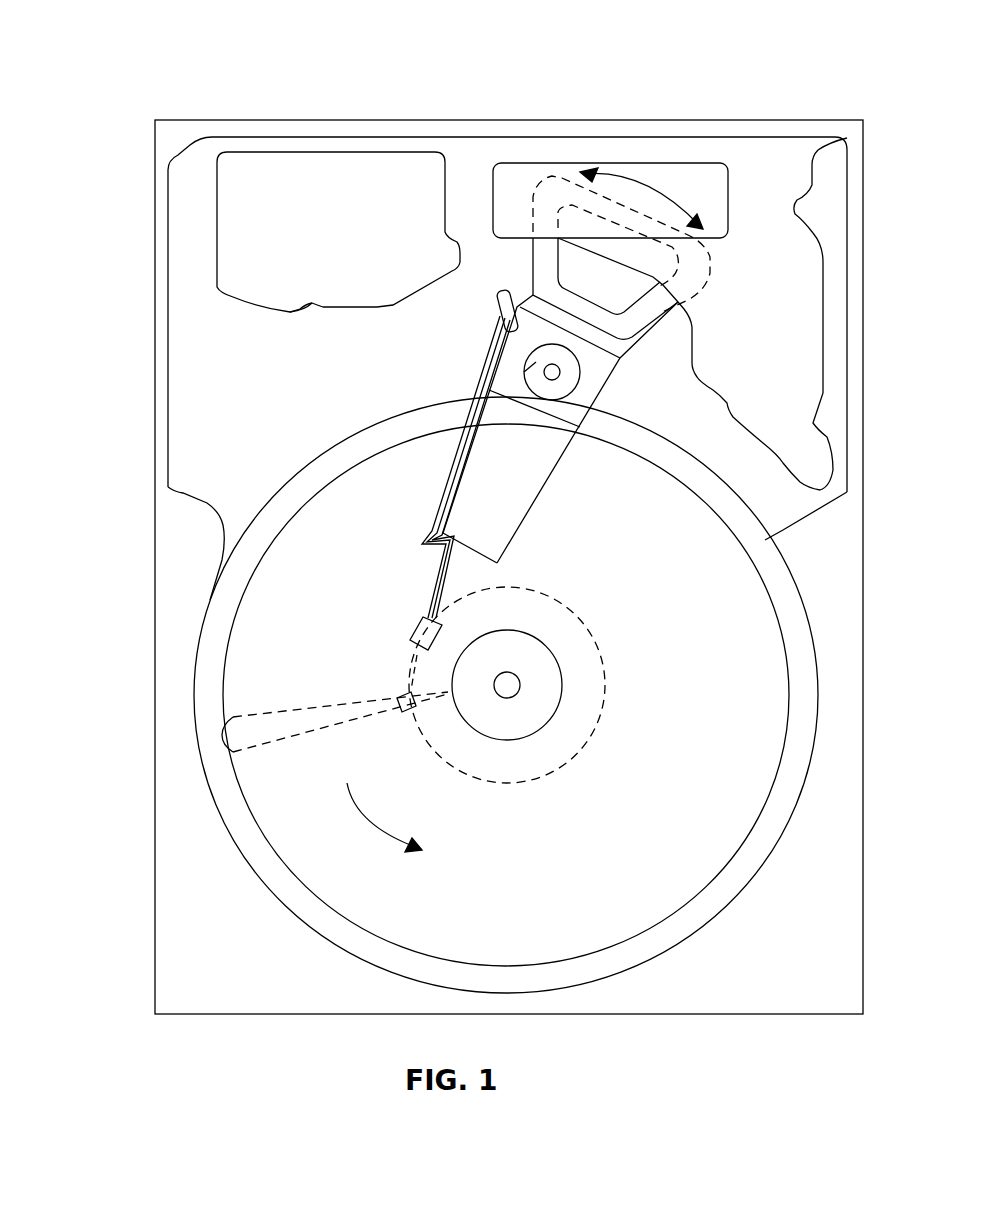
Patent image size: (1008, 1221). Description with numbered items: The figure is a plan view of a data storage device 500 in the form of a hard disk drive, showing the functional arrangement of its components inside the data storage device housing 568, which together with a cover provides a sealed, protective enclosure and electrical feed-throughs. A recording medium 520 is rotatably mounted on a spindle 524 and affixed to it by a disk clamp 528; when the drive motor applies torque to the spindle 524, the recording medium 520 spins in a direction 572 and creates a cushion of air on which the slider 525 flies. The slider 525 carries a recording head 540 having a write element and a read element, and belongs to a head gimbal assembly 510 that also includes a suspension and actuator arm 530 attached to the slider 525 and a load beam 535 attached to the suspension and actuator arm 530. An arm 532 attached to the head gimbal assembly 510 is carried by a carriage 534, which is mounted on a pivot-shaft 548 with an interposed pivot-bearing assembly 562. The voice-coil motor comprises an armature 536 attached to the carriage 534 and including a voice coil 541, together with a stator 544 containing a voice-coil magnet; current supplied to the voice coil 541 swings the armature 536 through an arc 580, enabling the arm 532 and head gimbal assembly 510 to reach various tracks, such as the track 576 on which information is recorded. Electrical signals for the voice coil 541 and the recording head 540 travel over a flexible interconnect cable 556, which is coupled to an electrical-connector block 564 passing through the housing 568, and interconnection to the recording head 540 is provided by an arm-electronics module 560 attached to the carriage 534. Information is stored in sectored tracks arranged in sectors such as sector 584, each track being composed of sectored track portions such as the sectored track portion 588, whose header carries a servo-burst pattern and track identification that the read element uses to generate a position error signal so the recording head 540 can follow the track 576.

The data storage device 500 is at (148, 40).
The head gimbal assembly 510 is at (80, 440).
The recording medium 520 is at (752, 670).
The spindle 524 is at (512, 690).
The slider 525 is at (427, 625).
The disk clamp 528 is at (515, 722).
The suspension and actuator arm 530 is at (430, 588).
The arm 532 is at (500, 505).
The carriage 534 is at (580, 416).
The load beam 535 is at (455, 572).
The armature 536 is at (505, 335).
The recording head 540 is at (413, 652).
The voice coil 541 is at (543, 252).
The stator 544 is at (812, 258).
The pivot-shaft 548 is at (553, 377).
The flexible interconnect cable 556 is at (327, 320).
The arm-electronics module 560 is at (508, 327).
The pivot-bearing assembly 562 is at (535, 362).
The electrical-connector block 564 is at (233, 232).
The data storage device housing 568 is at (843, 135).
The direction 572 is at (395, 812).
The track 576 is at (568, 612).
The arc 580 is at (642, 172).
The sector 584 is at (222, 735).
The sectored track portion 588 is at (397, 700).